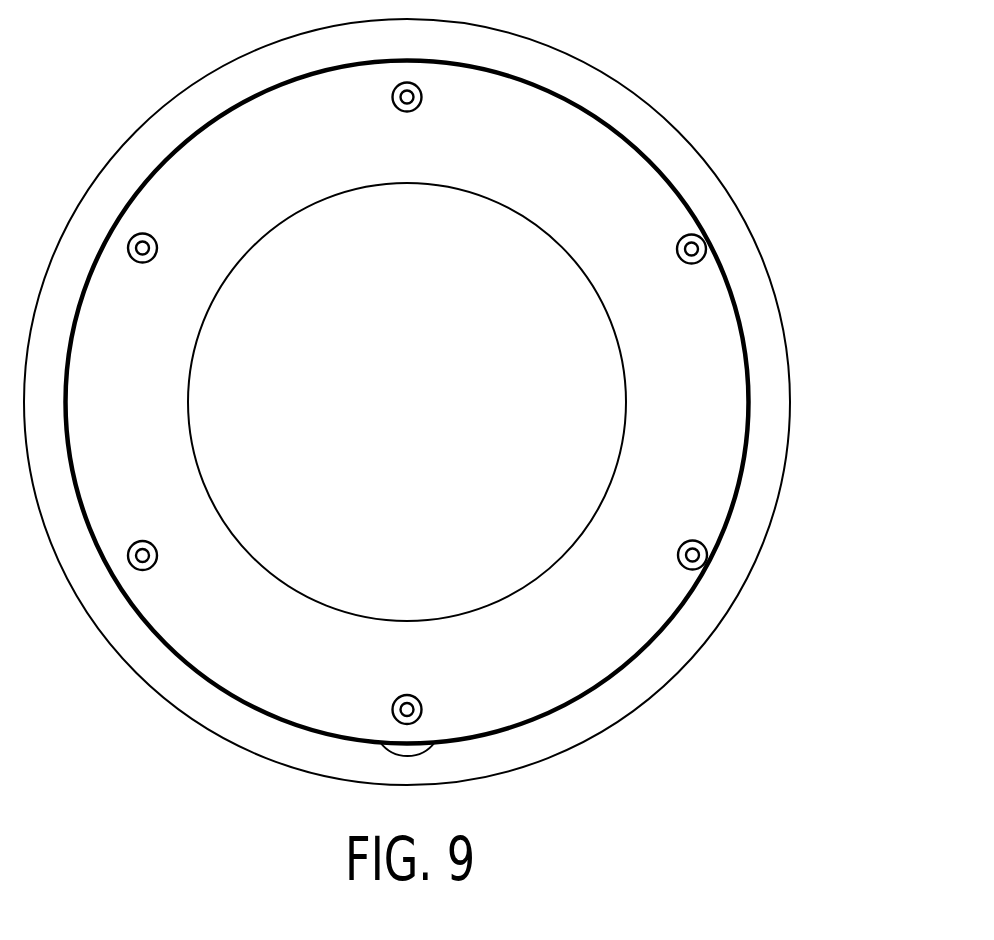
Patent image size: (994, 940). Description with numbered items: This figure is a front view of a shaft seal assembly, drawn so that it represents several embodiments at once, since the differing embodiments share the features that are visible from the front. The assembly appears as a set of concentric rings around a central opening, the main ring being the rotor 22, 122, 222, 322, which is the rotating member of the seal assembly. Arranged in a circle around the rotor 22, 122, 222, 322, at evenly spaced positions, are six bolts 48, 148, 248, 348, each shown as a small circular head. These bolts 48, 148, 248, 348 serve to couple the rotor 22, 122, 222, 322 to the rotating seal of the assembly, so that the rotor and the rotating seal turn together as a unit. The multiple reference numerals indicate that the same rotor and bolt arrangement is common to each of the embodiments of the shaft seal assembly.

The rotor 22 is at (443, 447).
The rotor 122 is at (443, 447).
The rotor 222 is at (443, 447).
The rotor 322 is at (527, 708).
The bolt 48 is at (499, 405).
The bolt 148 is at (499, 405).
The bolt 248 is at (499, 405).
The bolt 348 is at (693, 555).